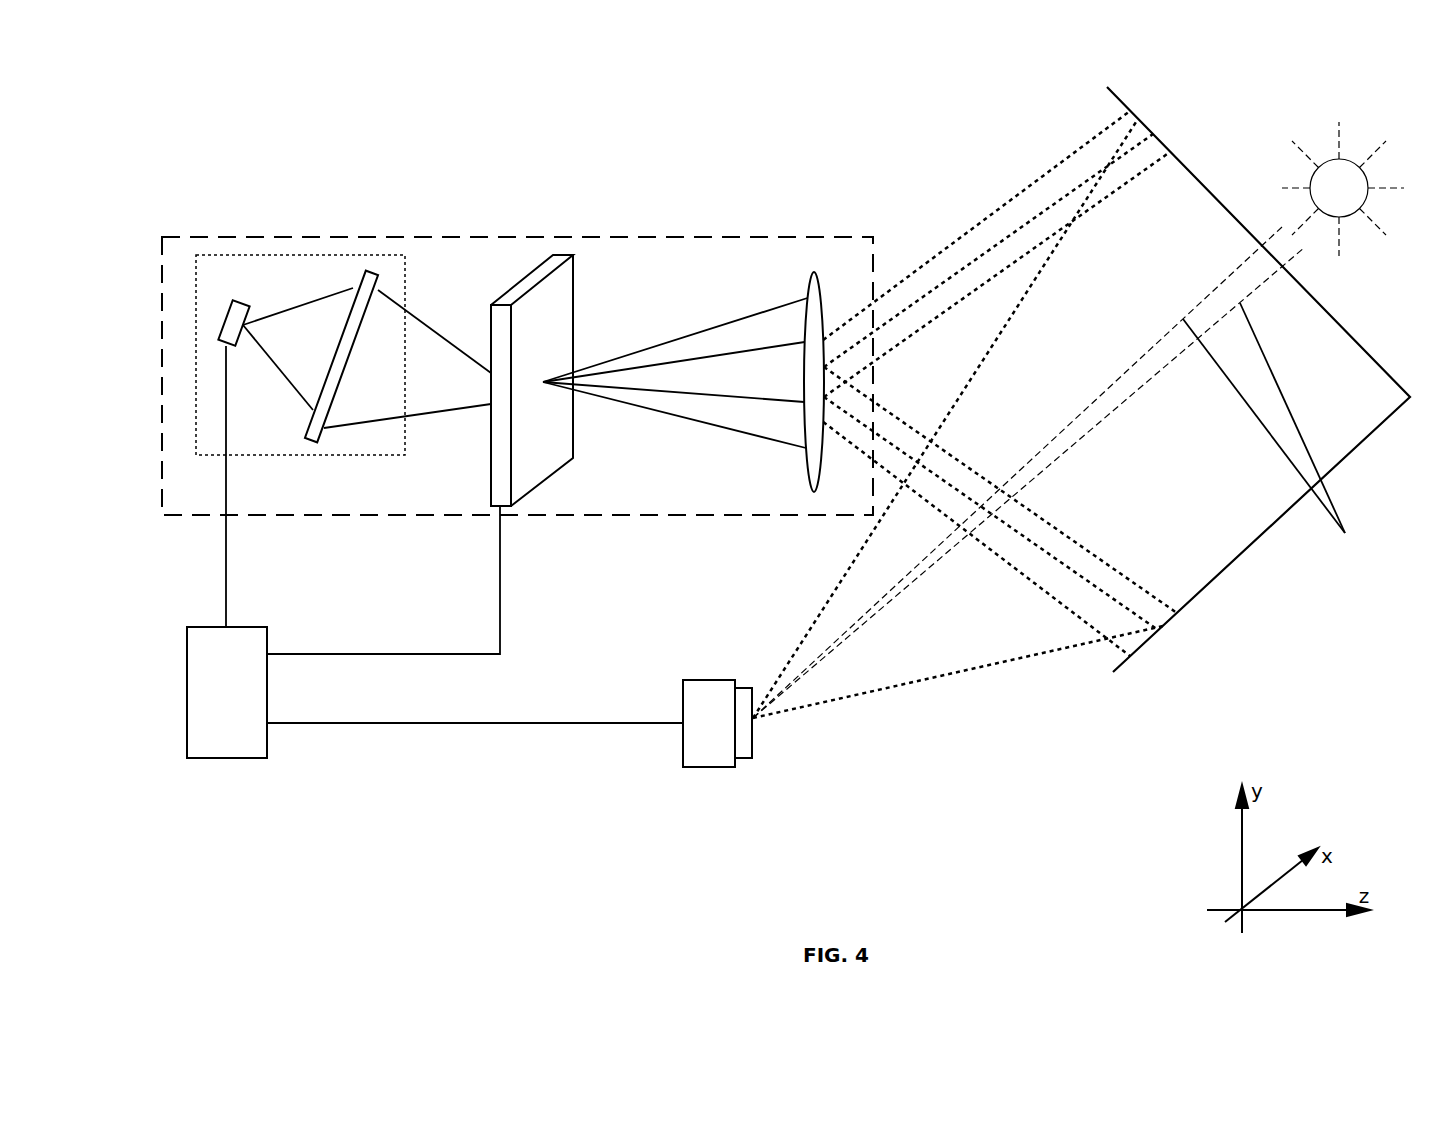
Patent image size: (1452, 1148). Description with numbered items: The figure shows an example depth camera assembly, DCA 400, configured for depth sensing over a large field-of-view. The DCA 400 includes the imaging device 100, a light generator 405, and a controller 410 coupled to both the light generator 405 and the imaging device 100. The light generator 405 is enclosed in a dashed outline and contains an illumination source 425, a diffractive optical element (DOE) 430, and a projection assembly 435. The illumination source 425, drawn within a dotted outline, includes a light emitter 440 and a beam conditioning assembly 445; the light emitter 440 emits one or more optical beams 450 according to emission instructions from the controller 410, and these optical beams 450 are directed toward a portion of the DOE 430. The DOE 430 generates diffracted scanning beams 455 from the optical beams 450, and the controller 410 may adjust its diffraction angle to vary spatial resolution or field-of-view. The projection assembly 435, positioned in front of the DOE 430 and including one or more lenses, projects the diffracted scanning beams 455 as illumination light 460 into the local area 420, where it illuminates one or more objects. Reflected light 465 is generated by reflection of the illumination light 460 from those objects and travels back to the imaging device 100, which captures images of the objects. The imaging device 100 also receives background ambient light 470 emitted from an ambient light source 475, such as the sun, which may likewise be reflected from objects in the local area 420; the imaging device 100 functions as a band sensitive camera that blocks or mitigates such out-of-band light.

The depth camera assembly 400 is at (153, 76).
The light generator 405 is at (681, 225).
The controller 410 is at (233, 758).
The local area 420 is at (1200, 573).
The illumination source 425 is at (370, 254).
The diffractive optical element 430 is at (540, 273).
The projection assembly 435 is at (820, 293).
The light emitter 440 is at (235, 300).
The beam conditioning assembly 445 is at (323, 443).
The optical beams 450 is at (299, 302).
The diffracted scanning beams 455 is at (717, 395).
The illumination light 460 is at (987, 222).
The reflected light 465 is at (992, 663).
The background ambient light 470 is at (1089, 472).
The ambient light source 475 is at (1305, 120).
The imaging device 100 is at (743, 742).